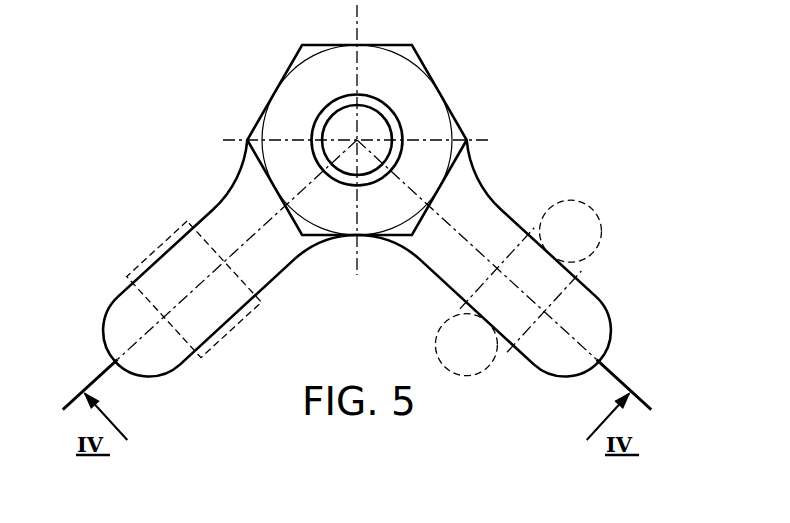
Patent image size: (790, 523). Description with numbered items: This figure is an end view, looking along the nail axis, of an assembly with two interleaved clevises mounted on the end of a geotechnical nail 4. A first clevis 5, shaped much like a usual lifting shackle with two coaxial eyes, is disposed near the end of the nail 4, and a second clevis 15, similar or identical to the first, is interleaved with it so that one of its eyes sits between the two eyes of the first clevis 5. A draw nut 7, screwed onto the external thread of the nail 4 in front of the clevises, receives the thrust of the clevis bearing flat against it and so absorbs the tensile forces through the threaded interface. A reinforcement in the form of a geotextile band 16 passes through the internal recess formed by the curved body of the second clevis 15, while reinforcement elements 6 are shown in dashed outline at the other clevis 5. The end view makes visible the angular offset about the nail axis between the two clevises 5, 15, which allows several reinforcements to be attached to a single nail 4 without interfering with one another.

The draw nut 7 is at (422, 63).
The geotechnical nail 4 is at (376, 127).
The second clevis 15 is at (215, 207).
The clevis 5 is at (499, 207).
The geotextile band 16 is at (148, 257).
The rods 6 is at (603, 219).